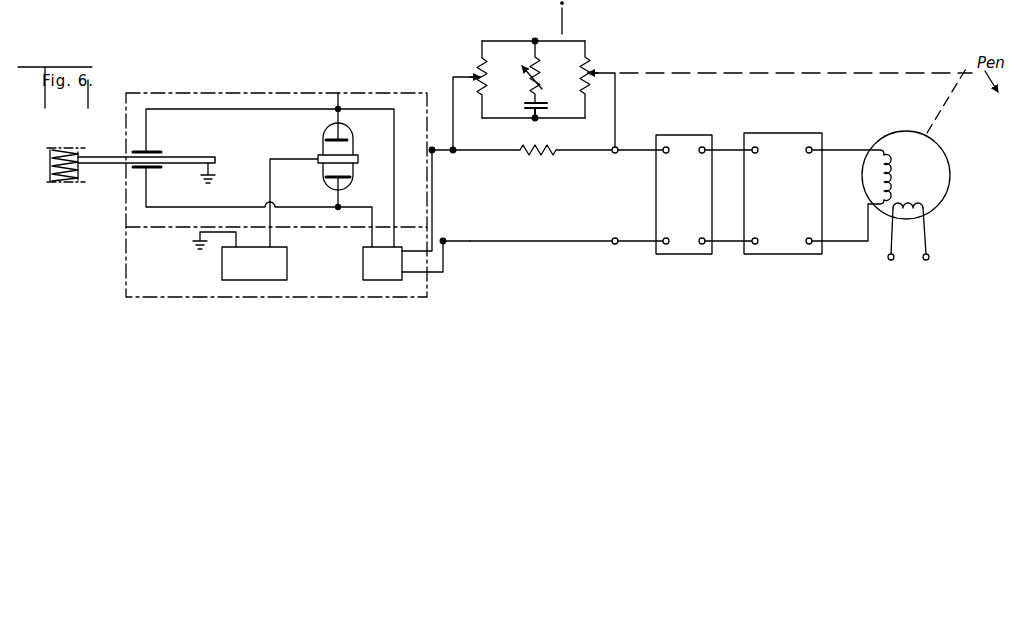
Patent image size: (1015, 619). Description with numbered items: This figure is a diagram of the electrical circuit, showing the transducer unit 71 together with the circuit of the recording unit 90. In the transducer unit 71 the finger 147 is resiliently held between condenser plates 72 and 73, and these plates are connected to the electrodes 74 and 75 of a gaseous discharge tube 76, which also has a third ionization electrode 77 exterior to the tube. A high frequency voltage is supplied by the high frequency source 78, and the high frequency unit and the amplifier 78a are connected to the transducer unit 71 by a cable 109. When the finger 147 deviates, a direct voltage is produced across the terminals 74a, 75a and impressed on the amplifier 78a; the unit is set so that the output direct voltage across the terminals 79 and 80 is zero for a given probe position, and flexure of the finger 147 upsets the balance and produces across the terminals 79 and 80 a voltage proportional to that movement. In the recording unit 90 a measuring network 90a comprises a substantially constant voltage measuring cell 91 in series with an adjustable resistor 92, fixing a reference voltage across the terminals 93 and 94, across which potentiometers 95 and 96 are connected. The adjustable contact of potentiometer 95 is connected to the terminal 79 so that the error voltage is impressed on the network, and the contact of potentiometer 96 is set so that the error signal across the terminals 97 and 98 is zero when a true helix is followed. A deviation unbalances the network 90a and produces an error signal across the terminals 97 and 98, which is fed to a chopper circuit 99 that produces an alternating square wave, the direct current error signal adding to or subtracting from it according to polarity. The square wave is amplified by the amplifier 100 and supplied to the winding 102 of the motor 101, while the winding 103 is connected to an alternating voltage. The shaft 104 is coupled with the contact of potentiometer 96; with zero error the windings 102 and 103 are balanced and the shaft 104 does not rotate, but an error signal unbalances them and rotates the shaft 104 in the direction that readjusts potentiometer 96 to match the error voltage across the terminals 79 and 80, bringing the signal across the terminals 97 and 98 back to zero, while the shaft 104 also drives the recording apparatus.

The finger 147 is at (93, 157).
The transducer unit 71 is at (262, 72).
The condenser plate 72 is at (157, 151).
The condenser plate 73 is at (150, 168).
The electrode 74 is at (325, 141).
The terminal 74a is at (338, 108).
The electrode 75 is at (352, 178).
The terminal 75a is at (338, 209).
The gaseous discharge tube 76 is at (356, 140).
The third ionization electrode 77 is at (318, 163).
The high frequency source 78 is at (222, 273).
The amplifier 78a is at (363, 268).
The terminal 79 is at (438, 152).
The terminal 80 is at (445, 241).
The recording unit 90 is at (796, 65).
The measuring network 90a is at (474, 66).
The measuring cell 91 is at (539, 100).
The adjustable resistor 92 is at (540, 66).
The terminal 93 is at (535, 41).
The terminal 94 is at (537, 120).
The potentiometer 95 is at (483, 81).
The potentiometer 96 is at (589, 62).
The terminal 97 is at (615, 156).
The terminal 98 is at (621, 222).
The chopper circuit 99 is at (685, 140).
The amplifier 100 is at (780, 140).
The motor 101 is at (940, 154).
The winding 102 is at (888, 160).
The winding 103 is at (922, 200).
The shaft 104 is at (946, 111).
The cable 109 is at (277, 216).